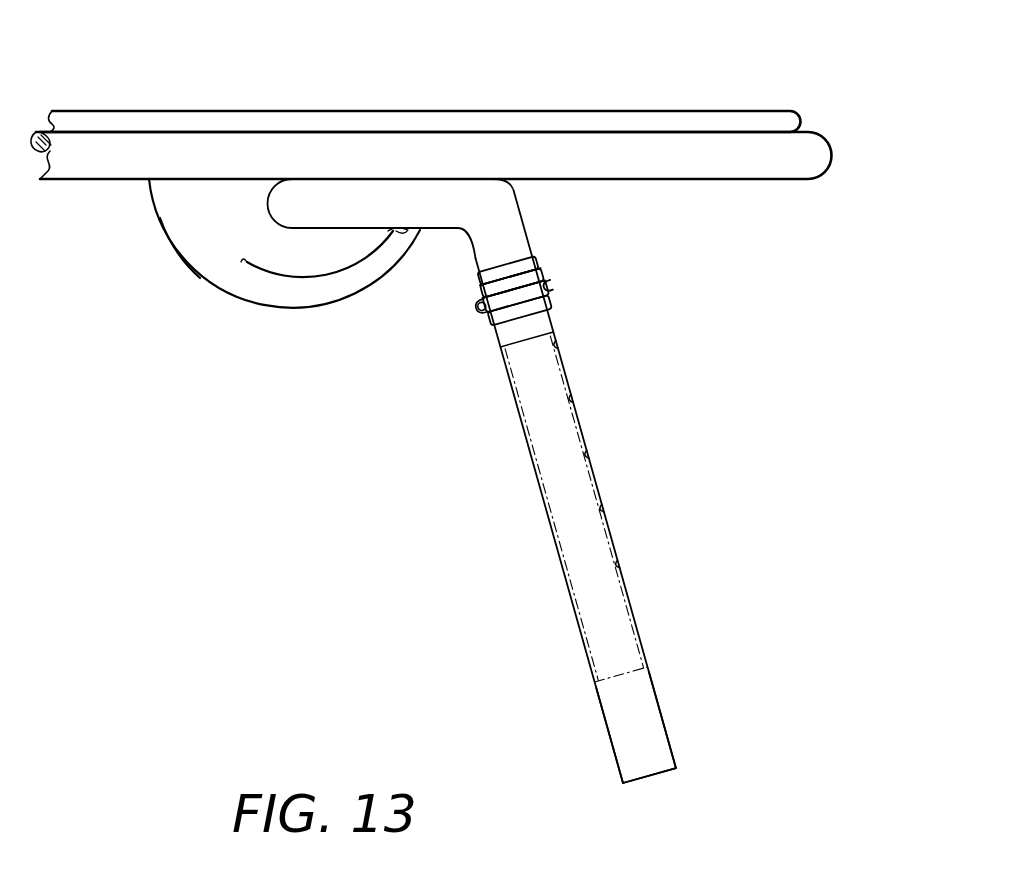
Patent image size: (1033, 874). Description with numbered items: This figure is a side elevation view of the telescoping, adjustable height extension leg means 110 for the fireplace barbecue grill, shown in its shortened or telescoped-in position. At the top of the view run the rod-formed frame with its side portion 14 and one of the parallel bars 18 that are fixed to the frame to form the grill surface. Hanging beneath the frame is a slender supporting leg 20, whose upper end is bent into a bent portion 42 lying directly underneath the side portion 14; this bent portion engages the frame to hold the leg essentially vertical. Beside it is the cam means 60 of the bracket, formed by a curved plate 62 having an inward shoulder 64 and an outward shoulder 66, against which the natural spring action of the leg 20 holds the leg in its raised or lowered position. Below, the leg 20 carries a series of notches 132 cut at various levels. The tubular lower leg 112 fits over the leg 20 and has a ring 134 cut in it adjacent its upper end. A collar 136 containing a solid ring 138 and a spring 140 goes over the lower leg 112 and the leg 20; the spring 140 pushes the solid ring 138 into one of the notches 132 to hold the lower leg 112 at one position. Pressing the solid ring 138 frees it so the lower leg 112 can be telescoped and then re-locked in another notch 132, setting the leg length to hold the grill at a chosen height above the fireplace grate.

The side portion 14 is at (231, 147).
The bar 18 is at (673, 123).
The supporting leg 20 is at (520, 210).
The bent portion 42 is at (367, 212).
The cam means 60 is at (330, 289).
The curved plate 62 is at (187, 263).
The inward shoulder 64 is at (243, 263).
The outward shoulder 66 is at (403, 231).
The extension leg means 110 is at (562, 578).
The lower leg 112 is at (658, 700).
The notches 132 is at (588, 455).
The ring 134 is at (548, 270).
The collar 136 is at (550, 278).
The solid ring 138 is at (557, 290).
The spring 140 is at (480, 312).